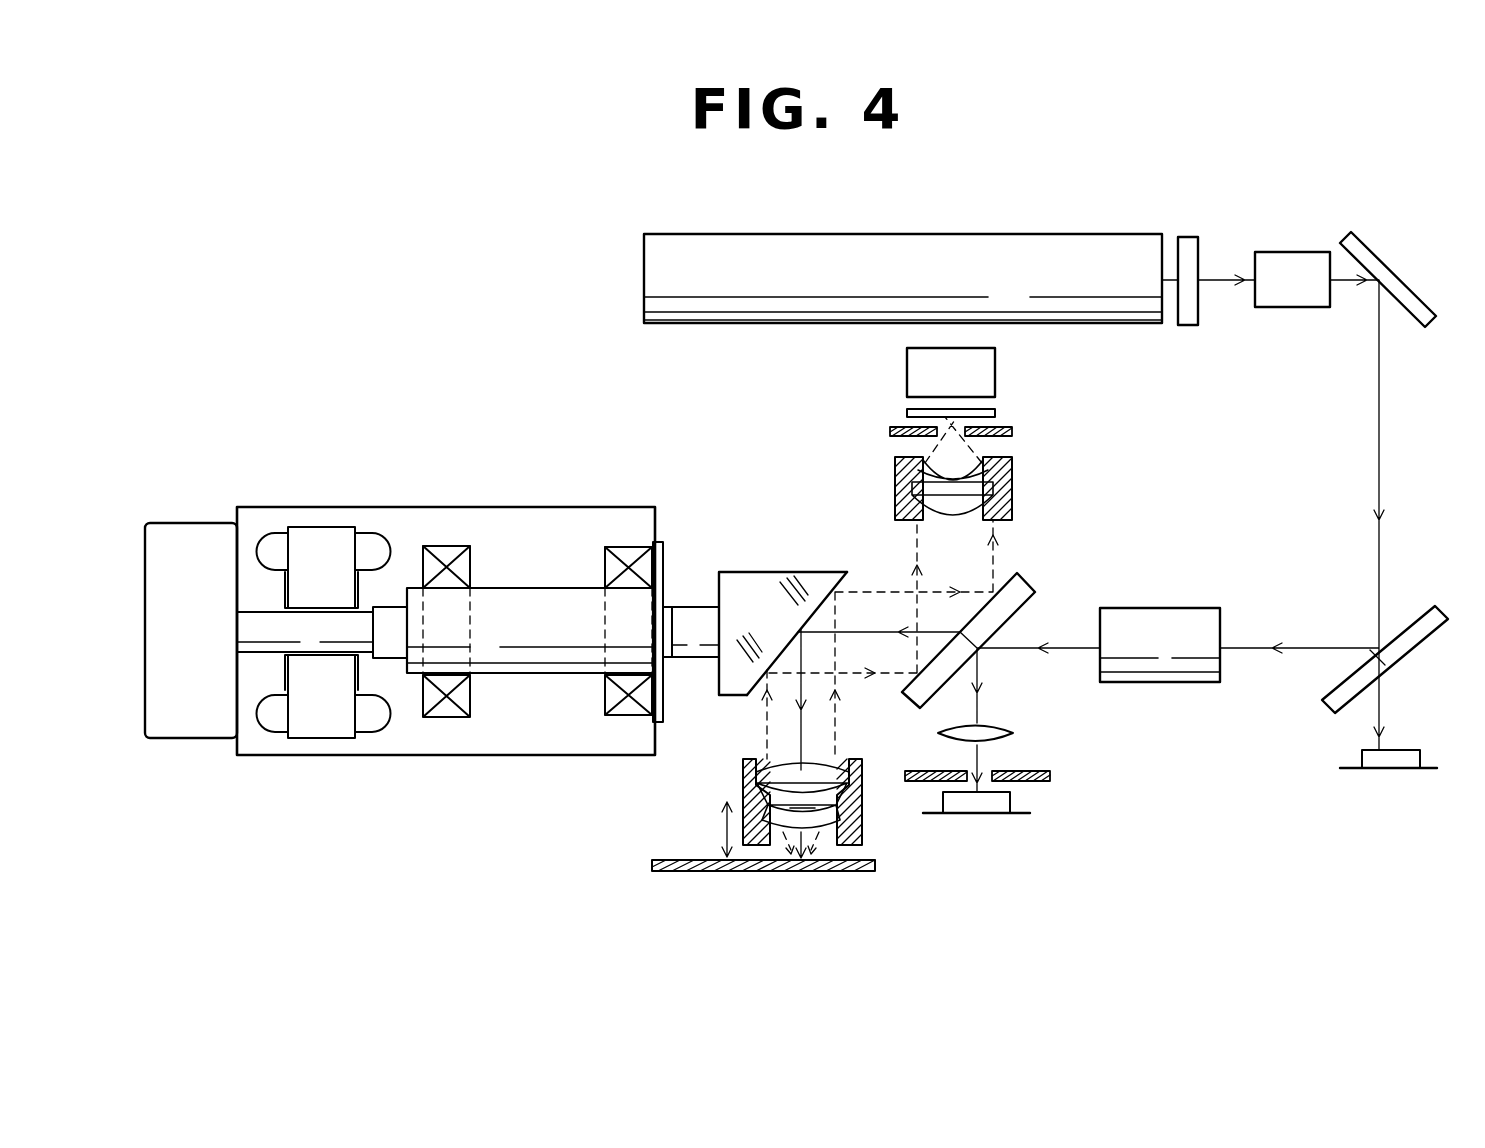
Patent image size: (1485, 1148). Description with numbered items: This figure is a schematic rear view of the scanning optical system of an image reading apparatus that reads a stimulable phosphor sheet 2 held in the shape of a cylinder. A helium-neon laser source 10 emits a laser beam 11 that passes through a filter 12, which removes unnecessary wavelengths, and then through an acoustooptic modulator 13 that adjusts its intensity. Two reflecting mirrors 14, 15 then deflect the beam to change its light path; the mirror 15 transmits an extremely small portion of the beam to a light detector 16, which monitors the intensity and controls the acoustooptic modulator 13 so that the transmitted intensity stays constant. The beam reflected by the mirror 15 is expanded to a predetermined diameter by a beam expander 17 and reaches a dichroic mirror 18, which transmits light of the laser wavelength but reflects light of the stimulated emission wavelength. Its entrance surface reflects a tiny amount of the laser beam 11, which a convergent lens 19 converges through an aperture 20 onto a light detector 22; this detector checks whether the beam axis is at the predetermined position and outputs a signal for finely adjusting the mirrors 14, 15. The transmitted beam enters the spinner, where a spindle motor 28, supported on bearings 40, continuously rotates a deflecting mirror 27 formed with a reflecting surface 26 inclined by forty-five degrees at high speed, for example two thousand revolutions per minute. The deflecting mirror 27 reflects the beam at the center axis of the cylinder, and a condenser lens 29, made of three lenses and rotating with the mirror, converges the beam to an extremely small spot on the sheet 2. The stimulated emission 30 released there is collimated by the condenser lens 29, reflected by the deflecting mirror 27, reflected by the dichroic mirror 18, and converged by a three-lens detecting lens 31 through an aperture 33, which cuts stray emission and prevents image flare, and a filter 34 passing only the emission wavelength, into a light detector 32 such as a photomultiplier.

The stimulable phosphor sheet 2 is at (748, 875).
The helium-neon laser source 10 is at (961, 234).
The laser beam 11 is at (1228, 278).
The filter 12 is at (1190, 236).
The acoustooptic modulator 13 is at (1292, 250).
The reflecting mirror 14 is at (1406, 294).
The reflecting mirror 15 is at (1443, 605).
The light detector 16 is at (1400, 770).
The beam expander 17 is at (1178, 604).
The dichroic mirror 18 is at (1033, 592).
The convergent lens 19 is at (1010, 730).
The aperture 20 is at (1050, 778).
The light detector 22 is at (633, 638).
The reflecting surface 26 is at (835, 607).
The deflecting mirror 27 is at (752, 578).
The spindle motor 28 is at (507, 505).
The condenser lens 29 is at (870, 815).
The stimulated emission 30 is at (1000, 550).
The detecting lens 31 is at (1018, 483).
The light detector 32 is at (907, 365).
The aperture 33 is at (1012, 432).
The filter 34 is at (995, 412).
The bearing 40 is at (455, 718).